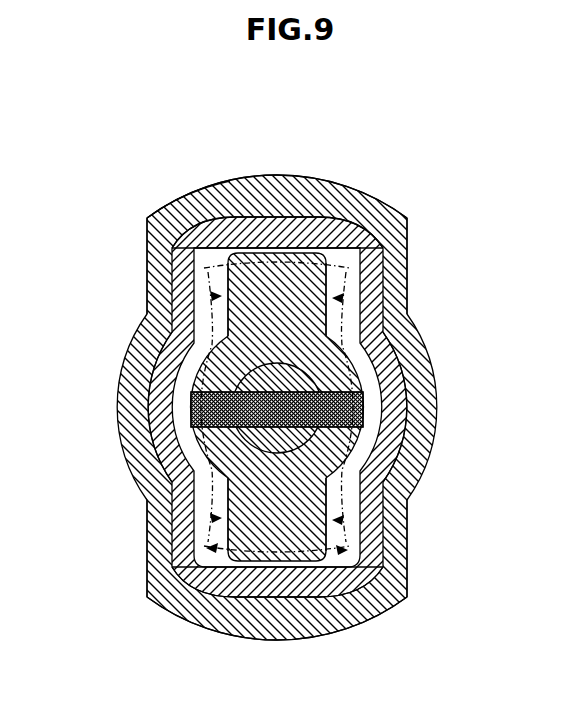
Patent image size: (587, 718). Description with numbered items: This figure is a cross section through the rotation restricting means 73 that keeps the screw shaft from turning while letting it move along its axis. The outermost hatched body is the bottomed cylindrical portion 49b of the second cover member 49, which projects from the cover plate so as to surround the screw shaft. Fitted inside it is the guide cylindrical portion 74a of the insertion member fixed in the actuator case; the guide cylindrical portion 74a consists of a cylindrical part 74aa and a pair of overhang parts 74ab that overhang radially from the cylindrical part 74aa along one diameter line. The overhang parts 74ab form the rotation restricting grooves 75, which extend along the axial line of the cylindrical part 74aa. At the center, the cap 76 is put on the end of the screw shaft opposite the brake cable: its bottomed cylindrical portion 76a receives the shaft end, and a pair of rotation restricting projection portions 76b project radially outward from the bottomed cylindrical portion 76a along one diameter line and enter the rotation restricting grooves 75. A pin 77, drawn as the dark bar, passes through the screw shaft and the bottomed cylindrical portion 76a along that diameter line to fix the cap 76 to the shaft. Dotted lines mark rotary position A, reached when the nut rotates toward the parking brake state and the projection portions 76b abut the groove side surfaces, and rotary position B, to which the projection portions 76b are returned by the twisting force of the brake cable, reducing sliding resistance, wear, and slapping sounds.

The second cover member 49 is at (343, 172).
The bottomed cylindrical portion 49b is at (195, 212).
The rotation restricting means 73 is at (150, 565).
The guide cylindrical portion 74a is at (134, 433).
The cylindrical part 74aa is at (403, 397).
The overhang parts 74ab is at (345, 192).
The rotation restricting grooves 75 is at (205, 290).
The cap 76 is at (333, 312).
The bottomed cylindrical portion 76a is at (390, 457).
The rotation restricting projection portions 76b is at (250, 263).
The pin 77 is at (215, 408).
The rotary position A is at (150, 212).
The rotary position B is at (400, 212).